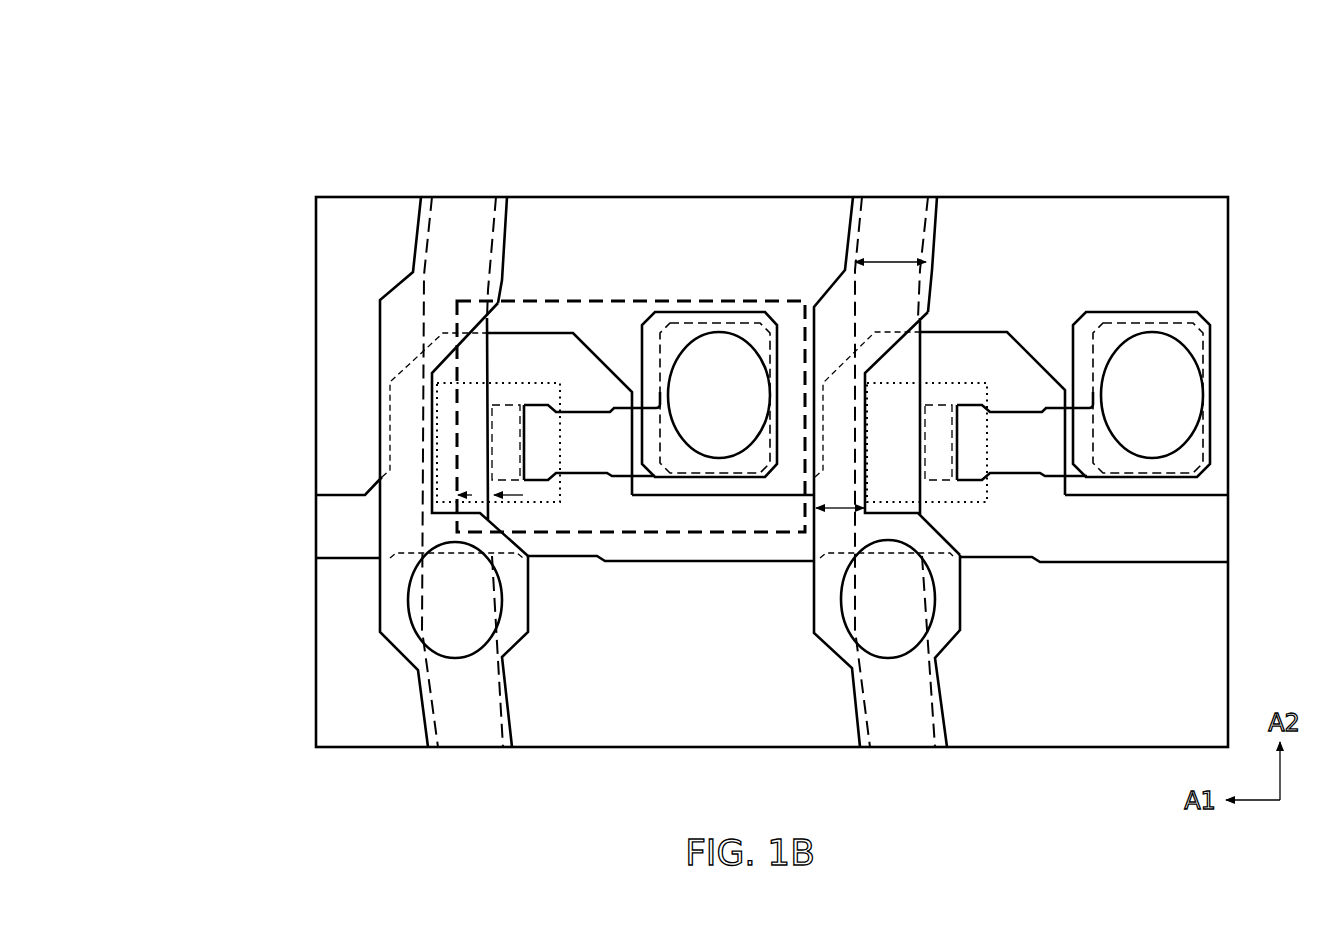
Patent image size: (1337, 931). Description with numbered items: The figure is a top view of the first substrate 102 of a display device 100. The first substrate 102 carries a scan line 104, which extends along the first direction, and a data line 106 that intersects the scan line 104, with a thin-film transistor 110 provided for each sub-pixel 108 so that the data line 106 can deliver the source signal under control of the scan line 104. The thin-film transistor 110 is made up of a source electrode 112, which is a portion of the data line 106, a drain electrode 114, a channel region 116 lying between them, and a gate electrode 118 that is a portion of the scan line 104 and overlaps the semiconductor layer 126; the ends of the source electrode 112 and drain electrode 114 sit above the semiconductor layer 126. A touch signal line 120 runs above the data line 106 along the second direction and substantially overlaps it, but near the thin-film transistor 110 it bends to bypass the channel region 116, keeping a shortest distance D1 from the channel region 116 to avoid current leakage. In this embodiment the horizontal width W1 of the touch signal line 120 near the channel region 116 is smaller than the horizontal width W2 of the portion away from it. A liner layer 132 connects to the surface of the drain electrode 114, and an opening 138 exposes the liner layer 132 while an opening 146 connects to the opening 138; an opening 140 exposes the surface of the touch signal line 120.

The display device 100 is at (150, 87).
The first substrate 102 is at (280, 175).
The scan line 104 is at (1195, 523).
The data line 106 is at (412, 223).
The sub-pixel 108 is at (1160, 237).
The thin-film transistor 110 is at (752, 535).
The source electrode 112 is at (477, 418).
The drain electrode 114 is at (583, 462).
The channel region 116 is at (537, 480).
The gate electrode 118 is at (595, 393).
The touch signal line 120 is at (507, 228).
The semiconductor layer 126 is at (436, 413).
The liner layer 132 is at (753, 313).
The opening 138 is at (926, 286).
The opening 146 is at (718, 333).
The opening 140 is at (467, 658).
The shortest distance D1 is at (477, 496).
The horizontal width W1 is at (840, 494).
The horizontal width W2 is at (890, 248).